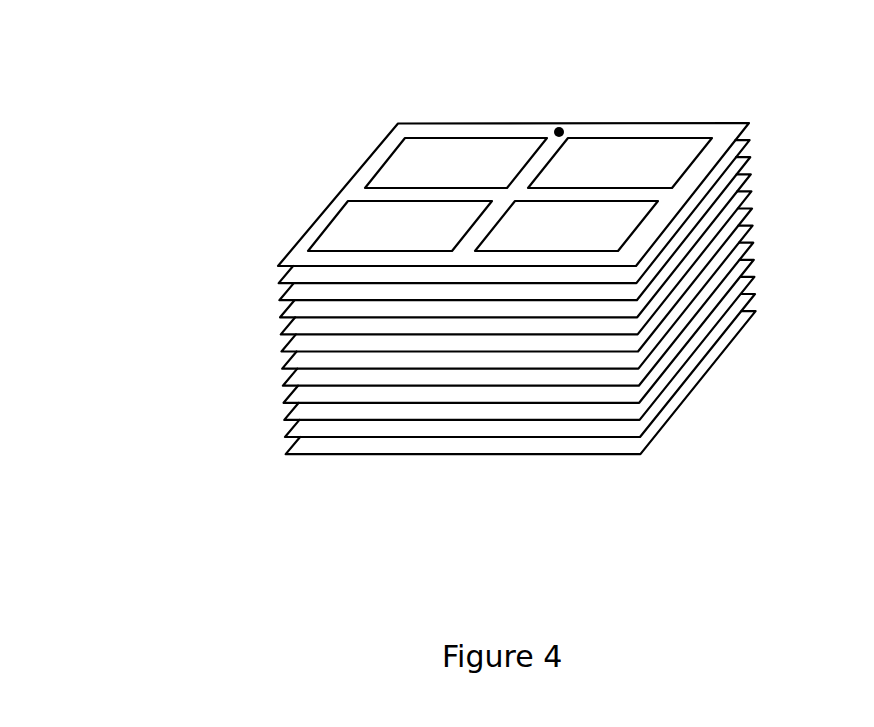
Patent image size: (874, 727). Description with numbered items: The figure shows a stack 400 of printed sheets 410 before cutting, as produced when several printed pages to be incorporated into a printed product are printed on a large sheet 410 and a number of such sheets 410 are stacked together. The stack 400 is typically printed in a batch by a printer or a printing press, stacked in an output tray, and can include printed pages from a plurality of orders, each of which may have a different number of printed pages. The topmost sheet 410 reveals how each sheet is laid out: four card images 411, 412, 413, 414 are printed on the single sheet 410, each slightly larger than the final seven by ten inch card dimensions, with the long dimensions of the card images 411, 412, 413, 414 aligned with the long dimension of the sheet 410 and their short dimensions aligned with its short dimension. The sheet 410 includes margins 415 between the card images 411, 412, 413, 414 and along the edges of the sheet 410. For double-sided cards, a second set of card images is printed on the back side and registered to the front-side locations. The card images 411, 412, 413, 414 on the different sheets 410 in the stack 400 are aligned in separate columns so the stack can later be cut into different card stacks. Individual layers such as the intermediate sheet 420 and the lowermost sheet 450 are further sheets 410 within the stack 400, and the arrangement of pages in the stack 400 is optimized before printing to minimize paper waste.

The stack 400 is at (218, 113).
The sheet 410 is at (533, 140).
The card image 411 is at (476, 178).
The card image 412 is at (636, 176).
The card image 413 is at (421, 240).
The card image 414 is at (582, 240).
The margins 415 is at (561, 129).
The intermediate layer 420 is at (748, 235).
The bottom layer 450 is at (737, 337).